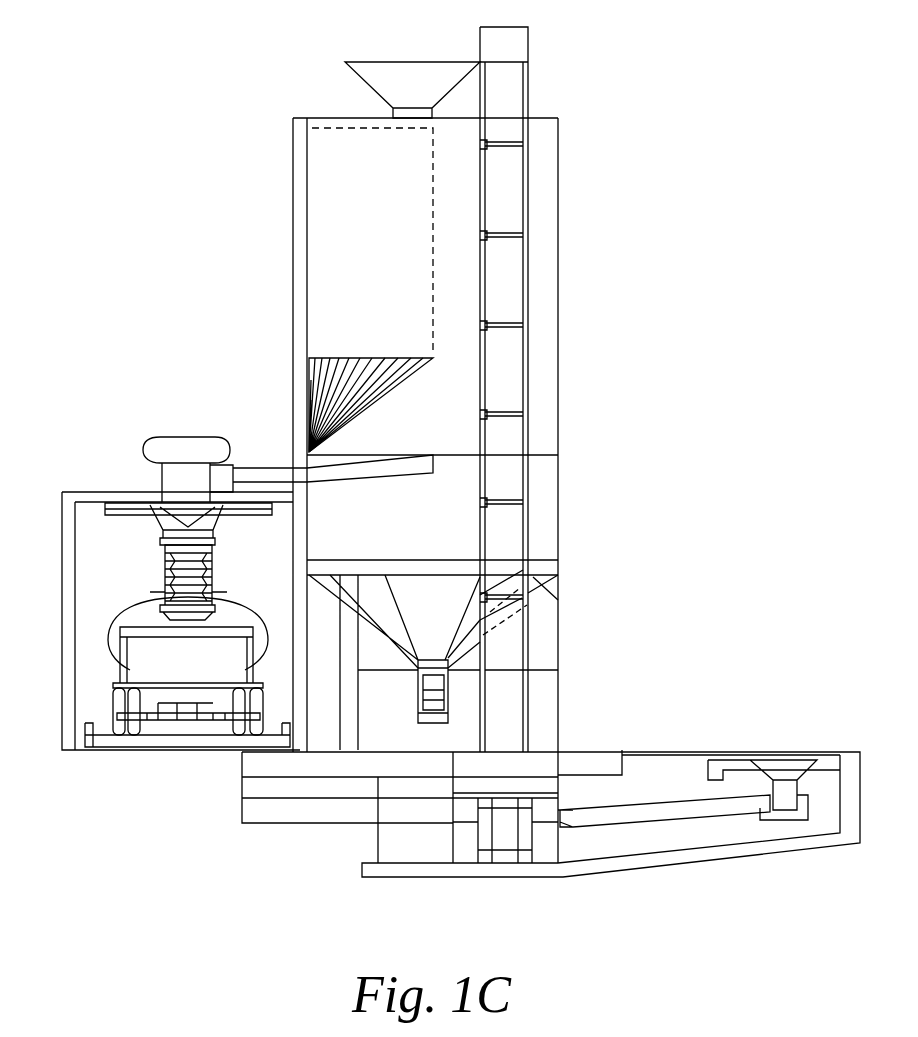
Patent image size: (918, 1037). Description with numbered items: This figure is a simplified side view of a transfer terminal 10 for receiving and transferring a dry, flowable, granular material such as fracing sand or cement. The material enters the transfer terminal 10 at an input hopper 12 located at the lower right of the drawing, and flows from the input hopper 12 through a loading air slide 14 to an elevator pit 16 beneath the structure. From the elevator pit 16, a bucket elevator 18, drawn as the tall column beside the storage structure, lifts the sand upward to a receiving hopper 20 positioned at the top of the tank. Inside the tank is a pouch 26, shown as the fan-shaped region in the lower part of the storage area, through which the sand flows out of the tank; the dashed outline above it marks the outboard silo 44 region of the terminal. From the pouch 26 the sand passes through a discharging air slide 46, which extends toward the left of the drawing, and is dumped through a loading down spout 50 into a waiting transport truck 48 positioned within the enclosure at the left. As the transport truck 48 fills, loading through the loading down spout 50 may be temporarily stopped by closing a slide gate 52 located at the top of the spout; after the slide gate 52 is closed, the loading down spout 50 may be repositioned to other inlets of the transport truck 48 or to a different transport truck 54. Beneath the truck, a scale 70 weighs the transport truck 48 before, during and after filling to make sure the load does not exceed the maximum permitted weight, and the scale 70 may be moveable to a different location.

The transfer terminal 10 is at (118, 156).
The input hopper 12 is at (797, 758).
The loading air slide 14 is at (698, 803).
The elevator pit 16 is at (478, 838).
The bucket elevator 18 is at (510, 298).
The receiving hopper 20 is at (368, 62).
The pouch 26 is at (372, 408).
The outboard silo 44 is at (401, 284).
The discharging air slide 46 is at (278, 467).
The transport truck 48 is at (110, 705).
The loading down spout 50 is at (163, 573).
The slide gate 52 is at (125, 502).
The different transport truck 54 is at (245, 608).
The scale 70 is at (190, 740).